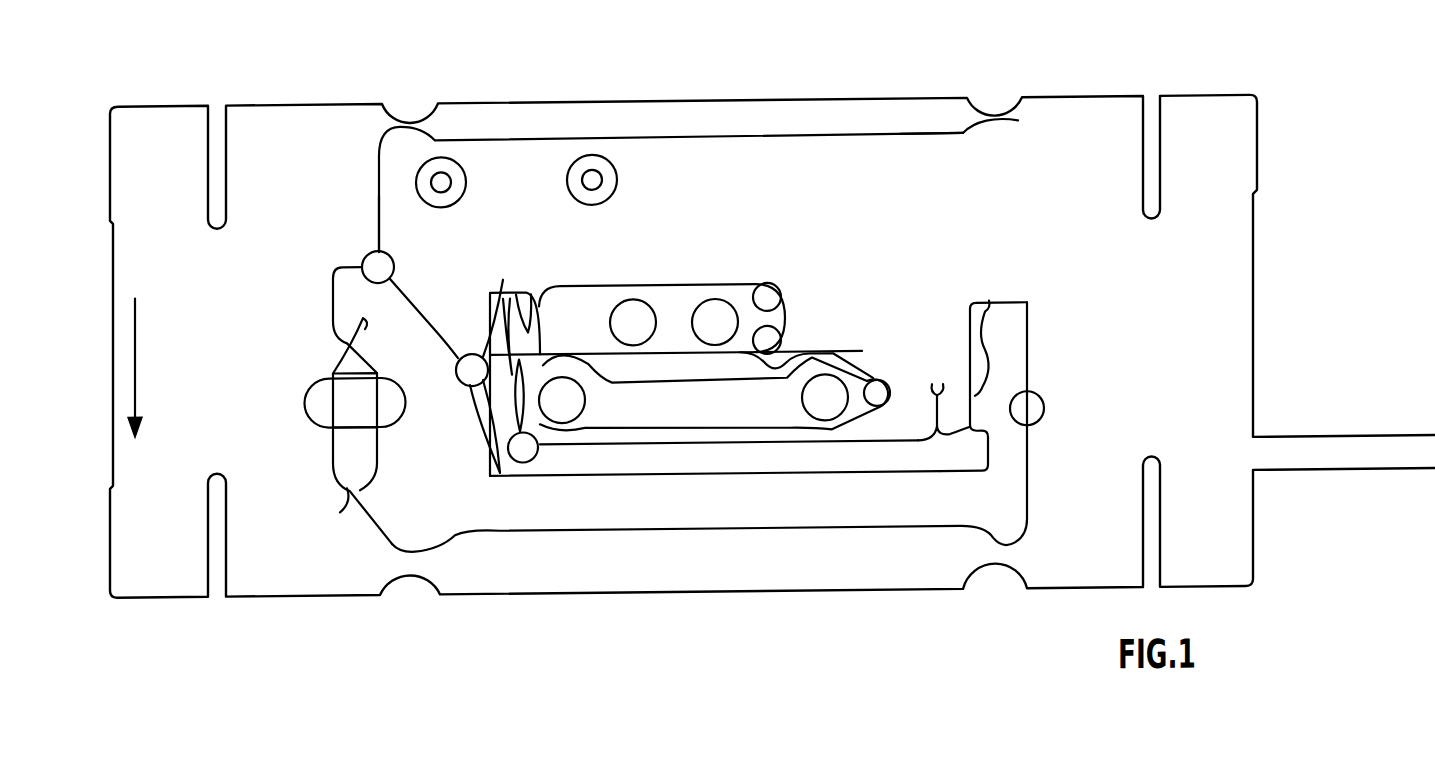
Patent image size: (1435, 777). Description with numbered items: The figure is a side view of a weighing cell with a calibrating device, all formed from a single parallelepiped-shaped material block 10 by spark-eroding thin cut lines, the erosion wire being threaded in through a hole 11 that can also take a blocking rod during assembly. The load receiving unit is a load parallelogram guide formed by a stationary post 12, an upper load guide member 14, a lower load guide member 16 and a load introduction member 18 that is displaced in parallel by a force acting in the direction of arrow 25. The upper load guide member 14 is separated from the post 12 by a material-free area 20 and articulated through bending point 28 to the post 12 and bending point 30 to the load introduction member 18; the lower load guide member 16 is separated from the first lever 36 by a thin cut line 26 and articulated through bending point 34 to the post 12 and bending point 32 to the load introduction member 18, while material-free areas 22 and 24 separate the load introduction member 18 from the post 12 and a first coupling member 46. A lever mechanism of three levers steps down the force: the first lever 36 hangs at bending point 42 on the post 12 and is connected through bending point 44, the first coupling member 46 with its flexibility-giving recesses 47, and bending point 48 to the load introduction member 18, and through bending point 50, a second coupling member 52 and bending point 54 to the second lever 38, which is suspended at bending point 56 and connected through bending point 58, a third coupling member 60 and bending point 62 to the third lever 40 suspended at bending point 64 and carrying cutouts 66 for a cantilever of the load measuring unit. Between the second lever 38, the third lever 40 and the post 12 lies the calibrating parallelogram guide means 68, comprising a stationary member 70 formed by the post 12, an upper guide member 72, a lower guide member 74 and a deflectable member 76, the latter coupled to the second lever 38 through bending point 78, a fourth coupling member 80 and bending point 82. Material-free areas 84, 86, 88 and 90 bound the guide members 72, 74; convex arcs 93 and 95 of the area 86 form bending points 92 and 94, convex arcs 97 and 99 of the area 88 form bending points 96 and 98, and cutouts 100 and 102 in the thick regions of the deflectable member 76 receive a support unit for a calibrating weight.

The material block 10 is at (843, 78).
The hole 11 is at (877, 417).
The stationary post 12 is at (1254, 371).
The upper load guide member 14 is at (507, 150).
The lower load guide member 16 is at (837, 582).
The load introduction member 18 is at (144, 153).
The material-free area 20 is at (925, 150).
The material-free area 22 is at (378, 198).
The material-free area 24 is at (330, 446).
The arrow 25 is at (126, 310).
The thin cut line 26 is at (660, 548).
The bending point 28 is at (995, 138).
The bending point 30 is at (410, 126).
The bending point 32 is at (410, 575).
The bending point 34 is at (998, 571).
The first lever 36 is at (947, 530).
The second lever 38 is at (910, 469).
The third lever 40 is at (752, 305).
The bending point 42 is at (435, 337).
The bending point 44 is at (340, 346).
The first coupling member 46 is at (338, 483).
The recesses 47 is at (348, 397).
The bending point 48 is at (362, 518).
The bending point 50 is at (982, 332).
The second coupling member 52 is at (982, 377).
The bending point 54 is at (1030, 425).
The bending point 56 is at (937, 404).
The bending point 58 is at (495, 445).
The third coupling member 60 is at (468, 392).
The bending point 62 is at (470, 362).
The bending point 64 is at (532, 304).
The cutouts 66 is at (706, 330).
The parallelogram guide means 68 is at (888, 316).
The stationary member 70 is at (913, 438).
The upper guide member 72 is at (641, 330).
The lower guide member 74 is at (710, 446).
The deflectable member 76 is at (608, 430).
The bending point 78 is at (500, 468).
The fourth coupling member 80 is at (490, 405).
The bending point 82 is at (505, 309).
The material-free area 84 is at (790, 368).
The material-free area 86 is at (723, 398).
The material-free area 88 is at (630, 432).
The material-free area 90 is at (763, 450).
The bending point 92 is at (828, 392).
The convex arc 93 is at (863, 361).
The bending point 94 is at (566, 363).
The convex arc 95 is at (600, 368).
The bending point 96 is at (560, 426).
The convex arc 97 is at (593, 440).
The bending point 98 is at (843, 451).
The convex arc 99 is at (803, 451).
The cutout 100 is at (641, 330).
The cutout 102 is at (882, 385).